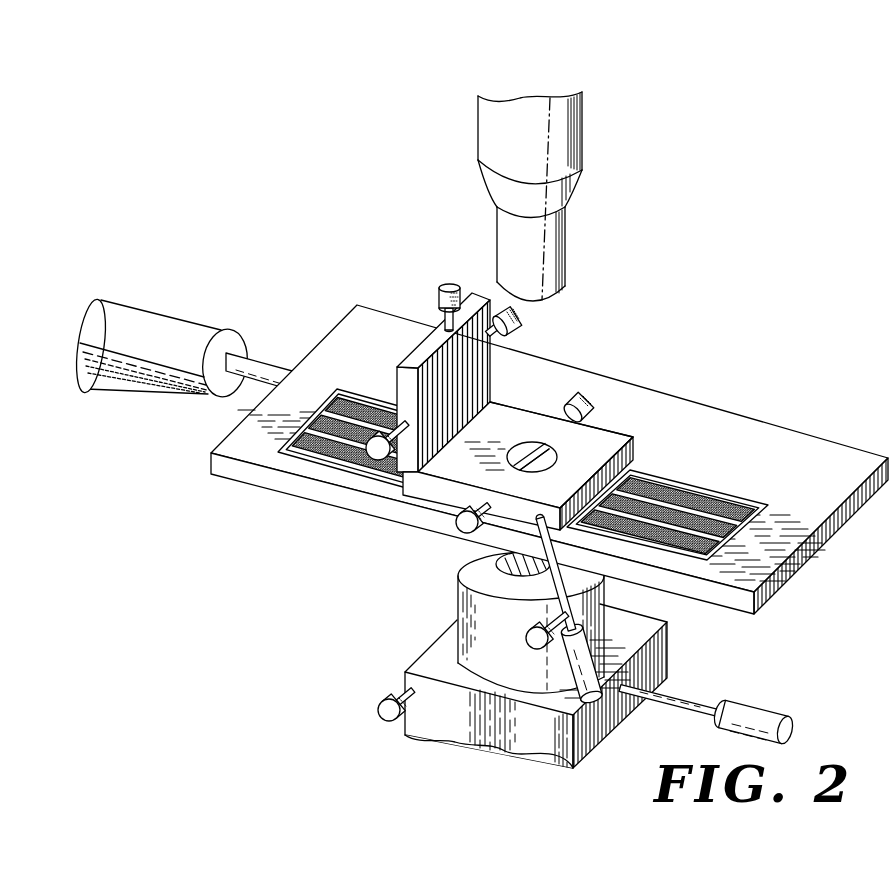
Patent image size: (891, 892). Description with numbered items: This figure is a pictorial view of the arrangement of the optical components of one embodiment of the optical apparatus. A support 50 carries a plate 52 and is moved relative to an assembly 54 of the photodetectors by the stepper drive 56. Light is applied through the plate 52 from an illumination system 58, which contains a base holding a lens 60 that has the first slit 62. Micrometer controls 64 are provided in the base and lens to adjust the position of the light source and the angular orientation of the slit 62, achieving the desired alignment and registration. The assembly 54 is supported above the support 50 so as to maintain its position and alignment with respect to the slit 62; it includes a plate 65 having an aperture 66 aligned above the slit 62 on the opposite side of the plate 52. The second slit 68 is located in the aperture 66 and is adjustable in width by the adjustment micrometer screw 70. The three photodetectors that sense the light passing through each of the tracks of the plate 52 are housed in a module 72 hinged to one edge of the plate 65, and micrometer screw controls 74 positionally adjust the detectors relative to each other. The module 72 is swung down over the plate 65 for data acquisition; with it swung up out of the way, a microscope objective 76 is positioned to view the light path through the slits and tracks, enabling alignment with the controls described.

The support 50 is at (657, 393).
The plate 52 is at (728, 492).
The assembly of the photodetectors 54 is at (630, 440).
The stepper drive 56 is at (153, 320).
The illumination system 58 is at (402, 672).
The lens 60 is at (460, 592).
The first slit 62 is at (462, 541).
The micrometer controls 64 is at (528, 642).
The plate 65 is at (590, 457).
The aperture 66 is at (526, 471).
The second slit 68 is at (527, 446).
The adjustment micrometer screw 70 is at (572, 400).
The module 72 is at (426, 382).
The micrometer screw controls 74 is at (440, 300).
The objective 76 is at (574, 246).